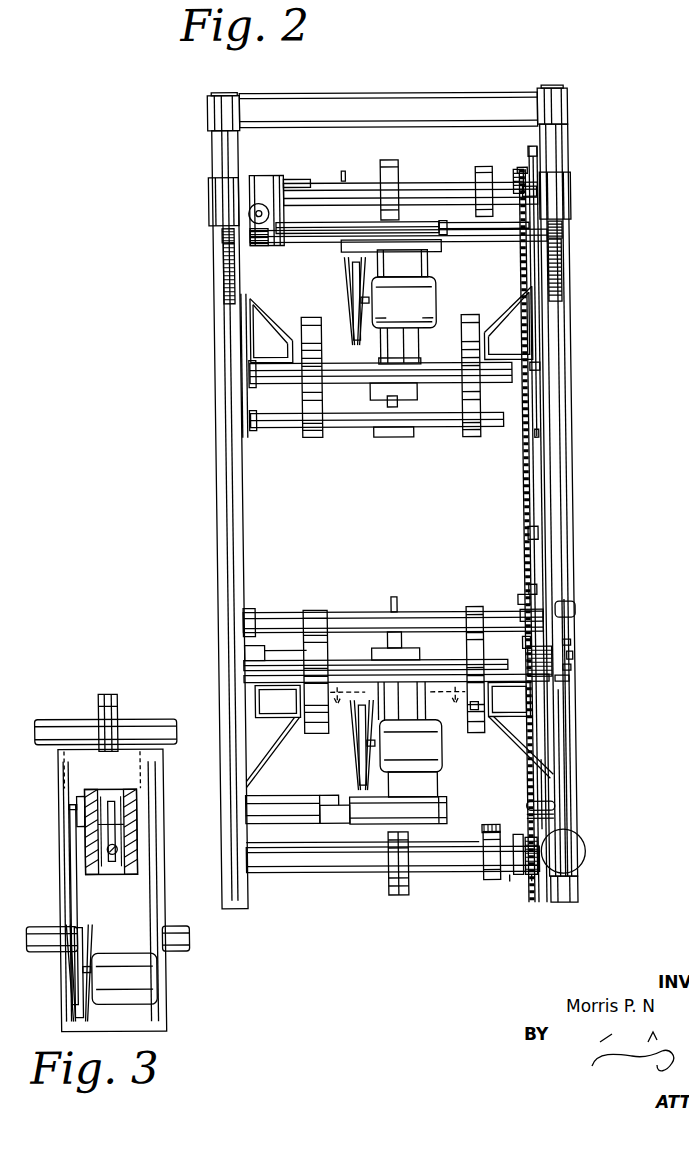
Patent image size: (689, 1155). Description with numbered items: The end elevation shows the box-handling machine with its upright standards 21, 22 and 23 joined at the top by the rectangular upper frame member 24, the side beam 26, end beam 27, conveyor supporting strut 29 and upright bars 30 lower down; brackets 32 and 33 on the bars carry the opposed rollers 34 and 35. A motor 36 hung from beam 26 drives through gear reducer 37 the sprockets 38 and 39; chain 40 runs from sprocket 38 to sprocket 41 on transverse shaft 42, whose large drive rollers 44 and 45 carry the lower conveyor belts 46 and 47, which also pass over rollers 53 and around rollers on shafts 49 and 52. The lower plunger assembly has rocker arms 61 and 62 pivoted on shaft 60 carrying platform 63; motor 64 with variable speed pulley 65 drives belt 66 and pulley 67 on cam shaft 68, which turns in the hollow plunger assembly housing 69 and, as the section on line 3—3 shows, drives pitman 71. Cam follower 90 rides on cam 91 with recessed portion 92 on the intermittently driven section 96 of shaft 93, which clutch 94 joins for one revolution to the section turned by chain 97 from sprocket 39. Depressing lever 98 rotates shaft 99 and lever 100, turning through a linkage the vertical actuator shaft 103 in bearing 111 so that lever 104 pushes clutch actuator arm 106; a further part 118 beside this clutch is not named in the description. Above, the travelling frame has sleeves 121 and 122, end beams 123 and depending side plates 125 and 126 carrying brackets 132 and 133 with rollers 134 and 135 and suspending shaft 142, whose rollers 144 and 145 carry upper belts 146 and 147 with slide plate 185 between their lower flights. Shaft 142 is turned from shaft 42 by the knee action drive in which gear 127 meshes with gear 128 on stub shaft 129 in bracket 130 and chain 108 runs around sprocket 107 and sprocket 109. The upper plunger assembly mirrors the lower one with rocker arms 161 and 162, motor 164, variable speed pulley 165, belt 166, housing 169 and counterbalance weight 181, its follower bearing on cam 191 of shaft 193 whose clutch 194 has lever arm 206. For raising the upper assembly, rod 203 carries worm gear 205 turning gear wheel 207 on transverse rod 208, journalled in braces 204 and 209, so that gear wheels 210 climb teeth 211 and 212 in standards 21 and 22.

In FIG. 2, the upper frame member 24 is at (390, 98).
In FIG. 2, the standard 21 is at (240, 508).
In FIG. 2, the standard 22 is at (568, 502).
In FIG. 2, the standard 23 is at (566, 742).
In FIG. 2, the upright bar 30 is at (560, 700).
In FIG. 2, the slidable sleeve 121 is at (210, 190).
In FIG. 2, the slidable sleeve 122 is at (571, 196).
In FIG. 2, the teeth 211 is at (221, 270).
In FIG. 2, the teeth 212 is at (562, 264).
In FIG. 2, the gear wheel 210 is at (221, 236).
In FIG. 2, the chain 108 is at (518, 456).
In FIG. 2, the sprocket 107 is at (540, 531).
In FIG. 2, the side plate 125 is at (541, 428).
In FIG. 2, the sprocket 109 is at (537, 367).
In FIG. 2, the lever 104 is at (523, 533).
In FIG. 2, the actuator shaft 103 is at (523, 590).
In FIG. 2, the second upstanding lever 100 is at (512, 600).
In FIG. 2, the longitudinal rod 203 is at (258, 203).
In FIG. 2, the worm gear 205 is at (248, 213).
In FIG. 2, the gear wheel 207 is at (262, 248).
In FIG. 2, the brace 204 is at (290, 178).
In FIG. 2, the end beam 123 is at (298, 192).
In FIG. 2, the shaft 193 is at (343, 176).
In FIG. 2, the cam 191 is at (398, 175).
In FIG. 2, the clutch 194 is at (474, 170).
In FIG. 2, the lever arm 206 is at (500, 192).
In FIG. 2, the second brace 209 is at (548, 184).
In FIG. 2, the rocker arm 162 is at (343, 228).
In FIG. 2, the rocker arm 161 is at (438, 224).
In FIG. 2, the transverse rod 208 is at (495, 242).
In FIG. 2, the counterbalance weight 181 is at (391, 259).
In FIG. 2, the motor 164 is at (436, 290).
In FIG. 2, the housing 169 is at (404, 336).
In FIG. 2, the variable speed pulley 165 is at (343, 280).
In FIG. 2, the belt 166 is at (350, 296).
In FIG. 2, the bracket 133 is at (262, 308).
In FIG. 2, the roller 135 is at (271, 330).
In FIG. 2, the bracket 132 is at (500, 312).
In FIG. 2, the roller 134 is at (460, 352).
In FIG. 2, the belt 147 is at (302, 440).
In FIG. 2, the large roller 144 is at (433, 376).
In FIG. 2, the shaft 142 is at (381, 386).
In FIG. 2, the large roller 145 is at (373, 398).
In FIG. 2, the belt 146 is at (462, 440).
In FIG. 2, the upper slide plate 185 is at (392, 440).
In FIG. 2, the side plate 126 is at (240, 408).
In FIG. 2, the shaft 52 is at (352, 616).
In FIG. 2, the rollers 53 is at (272, 612).
In FIG. 2, the lever 98 is at (388, 606).
In FIG. 2, the drive roller 45 is at (378, 650).
In FIG. 2, the drive roller 44 is at (452, 650).
In FIG. 2, the transverse shaft 99 is at (257, 650).
In FIG. 2, the transverse shaft 42 is at (286, 654).
In FIG. 2, the lower conveyor belt 47 is at (313, 610).
In FIG. 2, the lower conveyor belt 46 is at (466, 610).
In FIG. 2, the sprocket 41 is at (521, 655).
In FIG. 2, the conveyor supporting strut 29 is at (569, 615).
In FIG. 2, the gear 127 is at (564, 642).
In FIG. 2, the bracket 130 is at (566, 656).
In FIG. 2, the stub shaft 129 is at (564, 668).
In FIG. 2, the gear 128 is at (562, 680).
In FIG. 2, the transverse shaft 49 is at (237, 680).
In FIG. 2, the roller 35 is at (297, 697).
In FIG. 2, the bracket 33 is at (275, 738).
In FIG. 2, the bearing 111 is at (510, 699).
In FIG. 2, the bracket 32 is at (512, 740).
In FIG. 2, the section line 3— 3 is at (398, 707).
In FIG. 2, the roller 34 is at (466, 710).
In FIG. 2, the belt 66 is at (345, 737).
In FIG. 3, the belt 66 is at (70, 888).
In FIG. 2, the variable speed pulley 65 is at (345, 753).
In FIG. 3, the variable speed pulley 65 is at (76, 945).
In FIG. 2, the plunger assembly housing 69 is at (398, 714).
In FIG. 3, the plunger assembly housing 69 is at (104, 793).
In FIG. 2, the motor 64 is at (434, 754).
In FIG. 3, the motor 64 is at (130, 956).
In FIG. 2, the platform 63 is at (411, 798).
In FIG. 3, the platform 63 is at (153, 900).
In FIG. 2, the chain 40 is at (518, 772).
In FIG. 2, the rocker arm 62 is at (398, 814).
In FIG. 2, the rocker arm 61 is at (432, 810).
In FIG. 2, the end beam 27 is at (277, 803).
In FIG. 2, the supporting shaft 60 is at (318, 824).
In FIG. 3, the supporting shaft 60 is at (160, 932).
In FIG. 2, the actuator arm 106 is at (511, 826).
In FIG. 2, the clutch 94 is at (474, 860).
In FIG. 2, the intermittently driven shaft section 96 is at (335, 872).
In FIG. 3, the intermittently driven shaft section 96 is at (77, 722).
In FIG. 2, the transverse shaft 93 is at (287, 880).
In FIG. 2, the cam 91 is at (383, 872).
In FIG. 3, the cam 91 is at (112, 695).
In FIG. 2, the recessed portion 92 is at (399, 878).
In FIG. 2, the sprocket 39 is at (505, 876).
In FIG. 2, the sprocket 38 is at (518, 876).
In FIG. 2, the chain 97 is at (500, 882).
In FIG. 2, the gear reducer 37 is at (563, 851).
In FIG. 2, the motor 36 is at (575, 858).
In FIG. 2, the pin 118 is at (546, 807).
In FIG. 2, the side beam 26 is at (558, 820).
In FIG. 3, the cam follower 90 is at (110, 720).
In FIG. 3, the pitman 71 is at (104, 870).
In FIG. 3, the pulley 67 is at (62, 810).
In FIG. 3, the cam shaft 68 is at (76, 800).